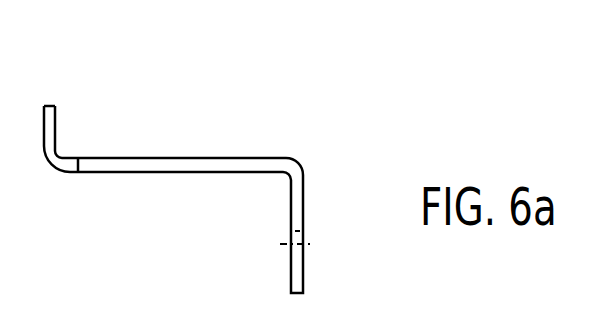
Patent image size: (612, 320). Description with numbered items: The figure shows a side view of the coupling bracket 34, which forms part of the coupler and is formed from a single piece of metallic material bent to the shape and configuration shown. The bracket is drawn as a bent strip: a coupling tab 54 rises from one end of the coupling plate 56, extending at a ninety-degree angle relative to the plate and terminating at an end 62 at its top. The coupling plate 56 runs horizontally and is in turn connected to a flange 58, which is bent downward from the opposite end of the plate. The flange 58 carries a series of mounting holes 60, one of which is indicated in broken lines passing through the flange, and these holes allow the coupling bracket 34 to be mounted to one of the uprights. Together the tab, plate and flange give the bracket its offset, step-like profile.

The coupling bracket 34 is at (257, 53).
The coupling tab 54 is at (122, 122).
The coupling plate 56 is at (113, 232).
The flange 58 is at (367, 158).
The mounting hole 60 is at (355, 258).
The end 62 is at (48, 106).